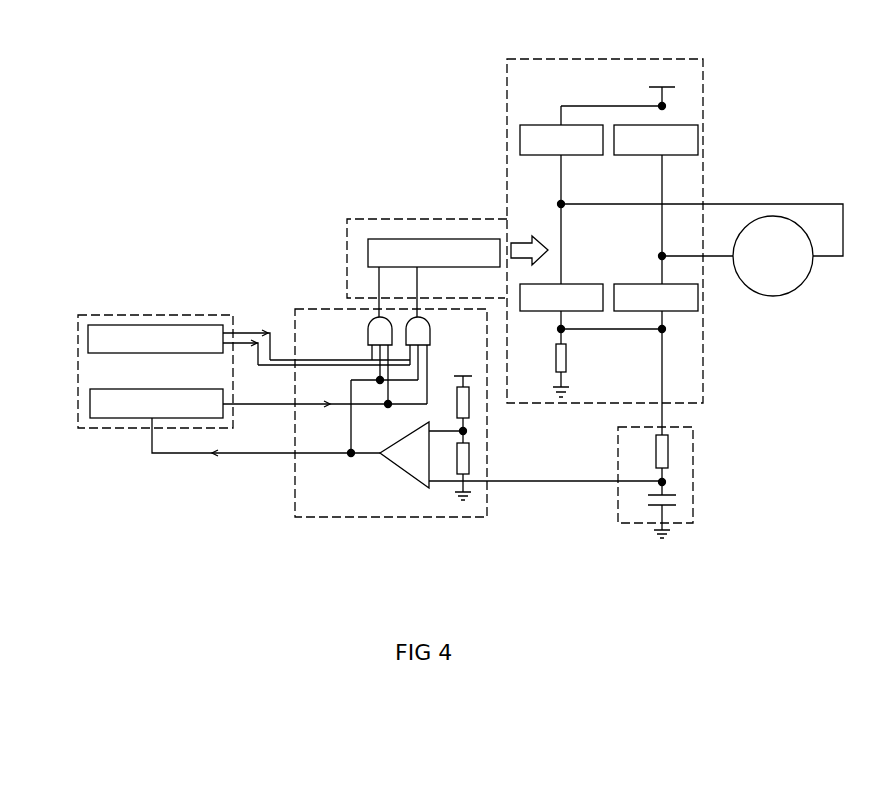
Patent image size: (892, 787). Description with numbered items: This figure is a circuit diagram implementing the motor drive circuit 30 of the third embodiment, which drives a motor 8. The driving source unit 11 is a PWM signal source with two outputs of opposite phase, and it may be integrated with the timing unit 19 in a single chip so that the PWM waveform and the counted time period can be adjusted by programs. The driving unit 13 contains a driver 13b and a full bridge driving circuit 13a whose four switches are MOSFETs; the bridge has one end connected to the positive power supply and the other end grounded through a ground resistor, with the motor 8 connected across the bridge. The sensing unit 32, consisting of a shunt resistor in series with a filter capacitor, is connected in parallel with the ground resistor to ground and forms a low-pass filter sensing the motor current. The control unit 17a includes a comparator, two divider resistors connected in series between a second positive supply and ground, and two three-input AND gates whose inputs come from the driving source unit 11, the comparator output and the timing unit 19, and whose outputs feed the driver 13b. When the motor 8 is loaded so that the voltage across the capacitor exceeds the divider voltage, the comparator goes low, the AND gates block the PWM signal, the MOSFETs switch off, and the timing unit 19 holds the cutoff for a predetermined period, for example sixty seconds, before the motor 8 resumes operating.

The motor drive circuit 30 is at (440, 105).
The driving unit 13 is at (597, 57).
The full bridge driving circuit 13a is at (667, 108).
The driver 13b is at (444, 238).
The motor 8 is at (768, 214).
The control unit 17a is at (325, 308).
The driving source unit 11 is at (81, 333).
The timing unit 19 is at (89, 397).
The sensing unit 32 is at (695, 455).